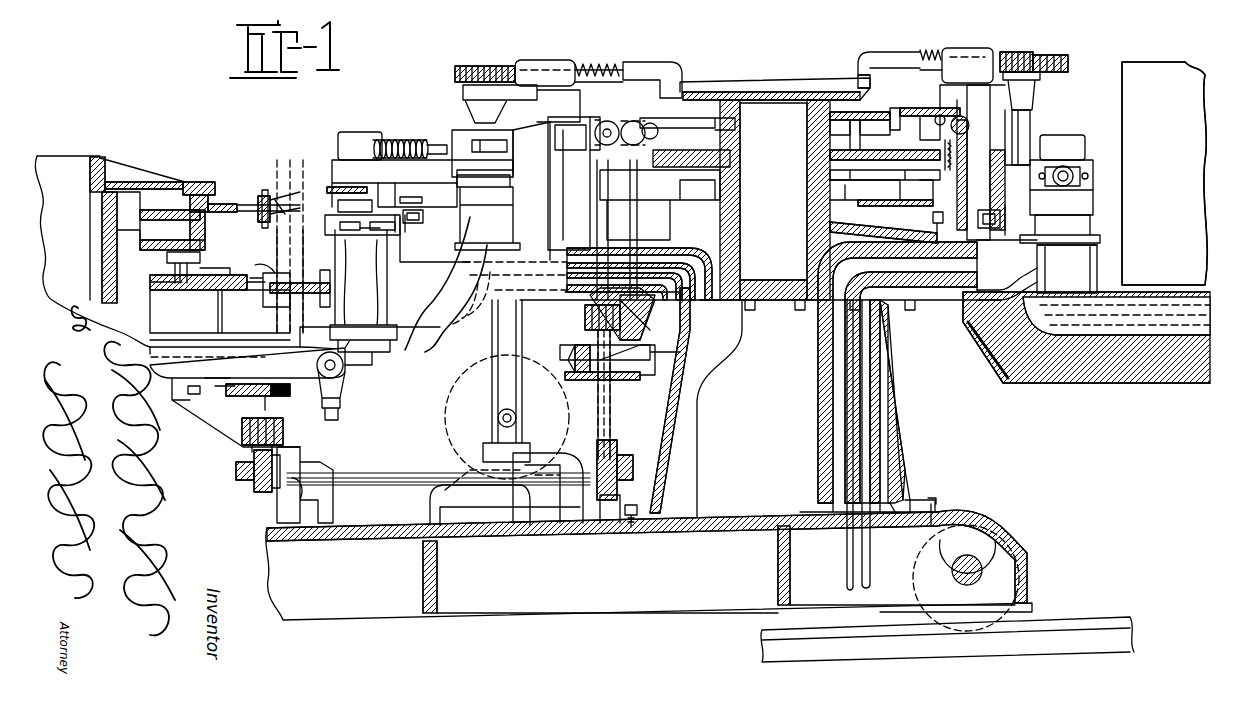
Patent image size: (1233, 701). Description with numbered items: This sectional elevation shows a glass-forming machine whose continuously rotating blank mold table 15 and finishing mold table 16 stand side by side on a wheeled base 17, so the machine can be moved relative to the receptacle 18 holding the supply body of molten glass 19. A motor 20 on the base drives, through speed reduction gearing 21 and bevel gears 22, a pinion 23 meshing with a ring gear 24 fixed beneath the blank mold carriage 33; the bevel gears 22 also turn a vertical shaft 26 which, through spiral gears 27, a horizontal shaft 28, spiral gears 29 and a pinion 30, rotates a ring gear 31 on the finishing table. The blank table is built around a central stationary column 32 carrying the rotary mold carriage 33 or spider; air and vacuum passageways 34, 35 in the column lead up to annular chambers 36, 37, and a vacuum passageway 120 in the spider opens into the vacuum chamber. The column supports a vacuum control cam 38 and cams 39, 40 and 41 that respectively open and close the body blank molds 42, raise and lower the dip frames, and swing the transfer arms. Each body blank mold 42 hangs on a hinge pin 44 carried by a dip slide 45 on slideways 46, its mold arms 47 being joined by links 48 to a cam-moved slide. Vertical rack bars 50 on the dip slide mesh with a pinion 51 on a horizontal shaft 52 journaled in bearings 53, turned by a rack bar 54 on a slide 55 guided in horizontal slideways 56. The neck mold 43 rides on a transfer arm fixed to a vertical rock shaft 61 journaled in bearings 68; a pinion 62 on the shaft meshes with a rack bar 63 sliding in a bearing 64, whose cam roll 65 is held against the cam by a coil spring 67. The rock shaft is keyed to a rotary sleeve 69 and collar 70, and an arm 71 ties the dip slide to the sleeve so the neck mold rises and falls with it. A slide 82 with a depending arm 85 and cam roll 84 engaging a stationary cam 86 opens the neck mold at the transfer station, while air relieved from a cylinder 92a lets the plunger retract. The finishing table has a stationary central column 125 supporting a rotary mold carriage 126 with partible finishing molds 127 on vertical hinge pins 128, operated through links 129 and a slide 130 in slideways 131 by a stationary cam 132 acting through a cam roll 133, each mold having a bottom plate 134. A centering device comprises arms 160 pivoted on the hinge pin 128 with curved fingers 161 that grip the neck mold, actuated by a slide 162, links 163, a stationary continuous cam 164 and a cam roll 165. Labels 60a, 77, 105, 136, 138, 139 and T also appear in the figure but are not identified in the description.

The blank mold table 15 is at (784, 74).
The finishing mold table 16 is at (75, 147).
The wheeled base 17 is at (525, 607).
The receptacle 18 is at (1100, 373).
The molten glass 19 is at (1168, 328).
The motor 20 is at (460, 393).
The speed reduction gearing 21 is at (497, 418).
The bevel gears 22 is at (590, 382).
The pinion 23 is at (585, 318).
The ring gear 24 is at (635, 325).
The vertical shaft 26 is at (612, 425).
The spiral gears 27 is at (612, 488).
The horizontal shaft 28 is at (405, 480).
The spiral gears 29 is at (250, 482).
The pinion 30 is at (283, 425).
The ring gear 31 is at (240, 449).
The central stationary column 32 is at (702, 390).
The rotary mold carriage 33 is at (576, 298).
The air passageway 34 is at (868, 385).
The vacuum passageway 35 is at (850, 400).
The annular chamber 36 is at (836, 326).
The annular chamber 37 is at (872, 320).
The vacuum control cam 38 is at (937, 223).
The cam 39 is at (895, 185).
The cam 40 is at (880, 157).
The cam 41 is at (885, 125).
The body blank mold 42 is at (1090, 274).
The neck mold 43 is at (1090, 226).
The hinge pin 44 is at (1012, 205).
The dip slide 45 is at (985, 135).
The slideways 46 is at (570, 205).
The mold arms 47 is at (1020, 250).
The links 48 is at (996, 224).
The vertical rack bars 50 is at (950, 158).
The pinion 51 is at (626, 143).
The horizontal shaft 52 is at (660, 131).
The bearings 53 is at (598, 138).
The rack bar 54 is at (930, 108).
The slide 55 is at (860, 114).
The horizontal slideways 56 is at (867, 121).
The block 60a is at (484, 214).
The vertical rock shaft 61 is at (1025, 133).
The pinion 62 is at (1036, 52).
The rack bar 63 is at (490, 66).
The bearing 64 is at (540, 62).
The cam roll 65 is at (668, 86).
The coil spring 67 is at (604, 62).
The bearings 68 is at (470, 110).
The rotary sleeve 69 is at (516, 130).
The collar 70 is at (460, 160).
The arm 71 is at (532, 142).
The spring 77 is at (415, 140).
The slide 82 is at (408, 223).
The cam roll 84 is at (440, 232).
The arm 85 is at (370, 235).
The stationary cam 86 is at (425, 222).
The cylinder 92a is at (368, 134).
The pipe 105 is at (701, 286).
The vacuum passageway 120 is at (600, 278).
The stationary central column 125 is at (97, 160).
The rotary mold carriage 126 is at (212, 382).
The finishing molds 127 is at (388, 312).
The vertical hinge pin 128 is at (283, 320).
The links 129 is at (270, 283).
The slide 130 is at (245, 287).
The slideways 131 is at (220, 307).
The stationary cam 132 is at (203, 256).
The cam roll 133 is at (167, 257).
The bottom plate 134 is at (352, 352).
The housing 136 is at (320, 162).
The gear 138 is at (290, 390).
The gear 139 is at (250, 385).
The arms 160 is at (355, 209).
The curved fingers 161 is at (350, 187).
The slide 162 is at (232, 204).
The links 163 is at (300, 190).
The stationary continuous cam 164 is at (183, 182).
The cam roll 165 is at (203, 186).
The T mark T is at (352, 112).